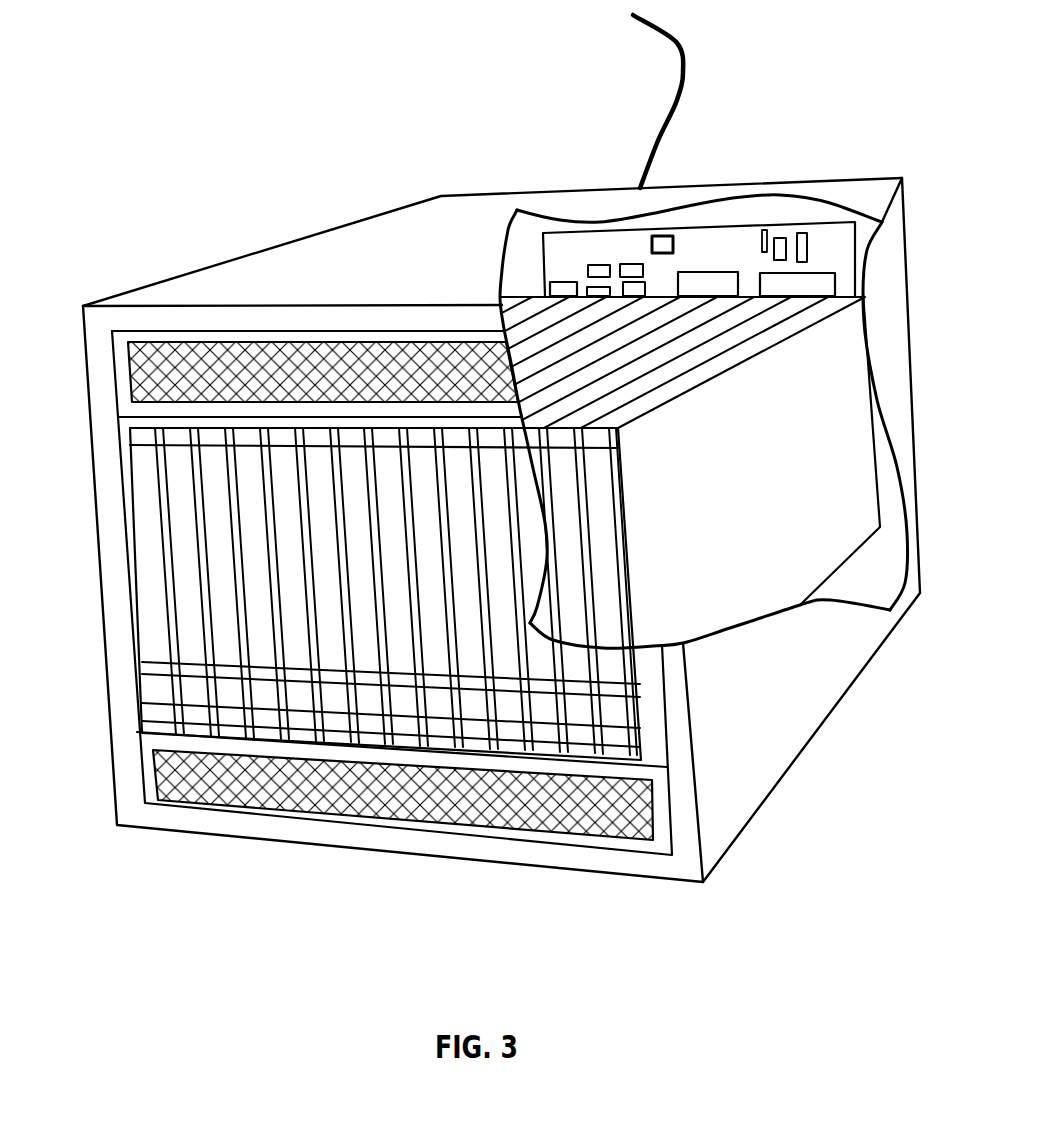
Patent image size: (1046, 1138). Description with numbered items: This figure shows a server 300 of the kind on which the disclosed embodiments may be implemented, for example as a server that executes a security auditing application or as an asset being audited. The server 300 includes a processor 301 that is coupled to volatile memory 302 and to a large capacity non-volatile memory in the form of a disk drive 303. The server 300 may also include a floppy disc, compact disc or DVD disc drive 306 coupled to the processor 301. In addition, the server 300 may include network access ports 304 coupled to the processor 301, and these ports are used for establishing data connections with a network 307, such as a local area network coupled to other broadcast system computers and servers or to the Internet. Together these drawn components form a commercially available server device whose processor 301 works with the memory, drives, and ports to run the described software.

The server 300 is at (462, 448).
The processor 301 is at (703, 283).
The volatile memory 302 is at (817, 283).
The disk drive 303 is at (224, 526).
The network access ports 304 is at (560, 283).
The disc drive 306 is at (190, 583).
The network 307 is at (677, 43).